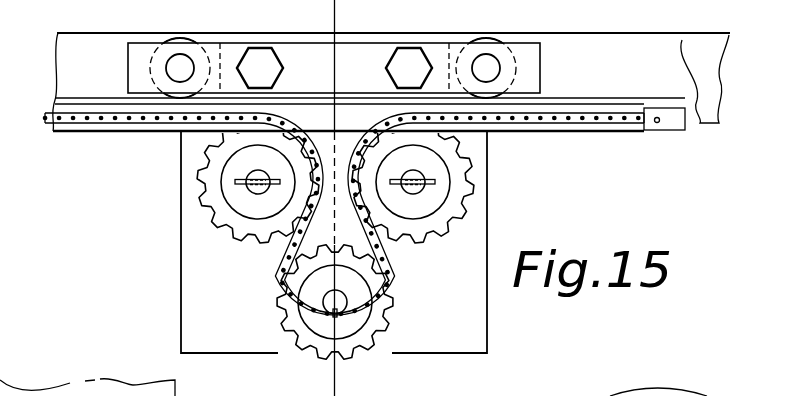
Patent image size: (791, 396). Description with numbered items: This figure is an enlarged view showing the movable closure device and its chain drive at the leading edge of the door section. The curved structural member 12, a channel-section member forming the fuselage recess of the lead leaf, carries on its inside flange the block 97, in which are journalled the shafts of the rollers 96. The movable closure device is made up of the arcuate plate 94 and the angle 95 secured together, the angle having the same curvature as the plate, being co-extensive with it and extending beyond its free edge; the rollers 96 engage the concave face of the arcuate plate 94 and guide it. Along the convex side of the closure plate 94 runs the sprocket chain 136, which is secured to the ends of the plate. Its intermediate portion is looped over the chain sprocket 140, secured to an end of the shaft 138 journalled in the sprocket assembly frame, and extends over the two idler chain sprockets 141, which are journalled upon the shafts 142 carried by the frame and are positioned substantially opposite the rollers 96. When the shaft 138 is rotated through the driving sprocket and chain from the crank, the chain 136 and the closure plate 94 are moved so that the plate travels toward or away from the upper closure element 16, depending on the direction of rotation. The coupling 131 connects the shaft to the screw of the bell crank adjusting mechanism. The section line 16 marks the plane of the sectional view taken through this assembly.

The curved structural member 12 is at (649, 44).
The upper closure element 16 is at (307, 26).
The arcuate plate 94 is at (600, 102).
The angle 95 is at (713, 96).
The rollers 96 is at (181, 40).
The block 97 is at (541, 62).
The coupling 131 is at (486, 331).
The sprocket chain 136 is at (124, 133).
The shaft 138 is at (342, 300).
The chain sprocket 140 is at (376, 322).
The idler chain sprockets 141 is at (258, 245).
The shafts 142 is at (270, 196).